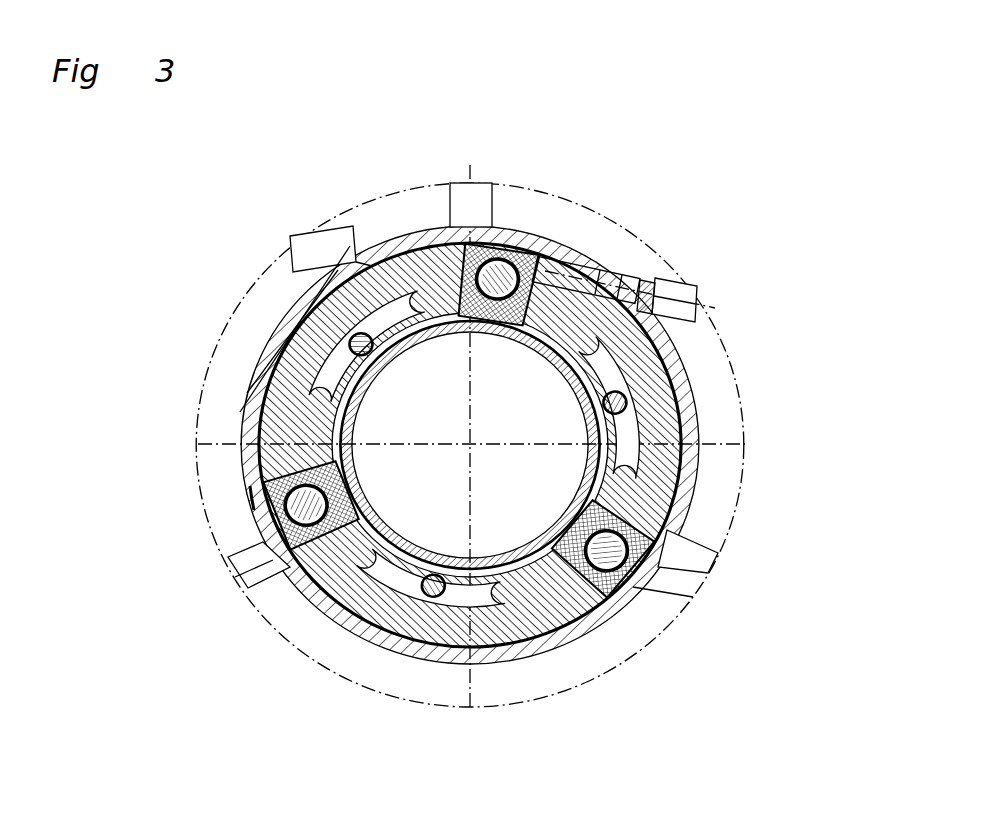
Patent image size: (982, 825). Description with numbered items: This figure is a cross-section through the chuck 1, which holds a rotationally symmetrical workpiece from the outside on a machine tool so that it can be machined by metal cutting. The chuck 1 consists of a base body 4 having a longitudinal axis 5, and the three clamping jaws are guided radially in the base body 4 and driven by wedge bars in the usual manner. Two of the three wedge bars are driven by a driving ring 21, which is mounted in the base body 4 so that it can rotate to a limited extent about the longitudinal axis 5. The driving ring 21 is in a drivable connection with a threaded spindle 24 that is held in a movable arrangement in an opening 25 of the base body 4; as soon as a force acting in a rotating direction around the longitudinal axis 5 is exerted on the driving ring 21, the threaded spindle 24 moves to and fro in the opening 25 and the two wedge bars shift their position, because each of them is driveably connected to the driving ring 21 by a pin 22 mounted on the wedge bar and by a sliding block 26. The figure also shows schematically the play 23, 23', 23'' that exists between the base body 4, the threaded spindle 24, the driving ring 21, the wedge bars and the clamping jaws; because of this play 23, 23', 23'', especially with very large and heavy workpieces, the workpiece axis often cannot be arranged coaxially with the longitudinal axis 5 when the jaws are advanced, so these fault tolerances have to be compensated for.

The chuck 1 is at (779, 193).
The base body 4 is at (533, 572).
The longitudinal axis 5 is at (472, 445).
The driving ring 21 is at (367, 597).
The pin 22 is at (487, 252).
The play 23 is at (221, 452).
The play 23' is at (368, 507).
The play 23'' is at (170, 494).
The threaded spindle 24 is at (599, 248).
The opening 25 is at (615, 273).
The sliding block 26 is at (430, 252).